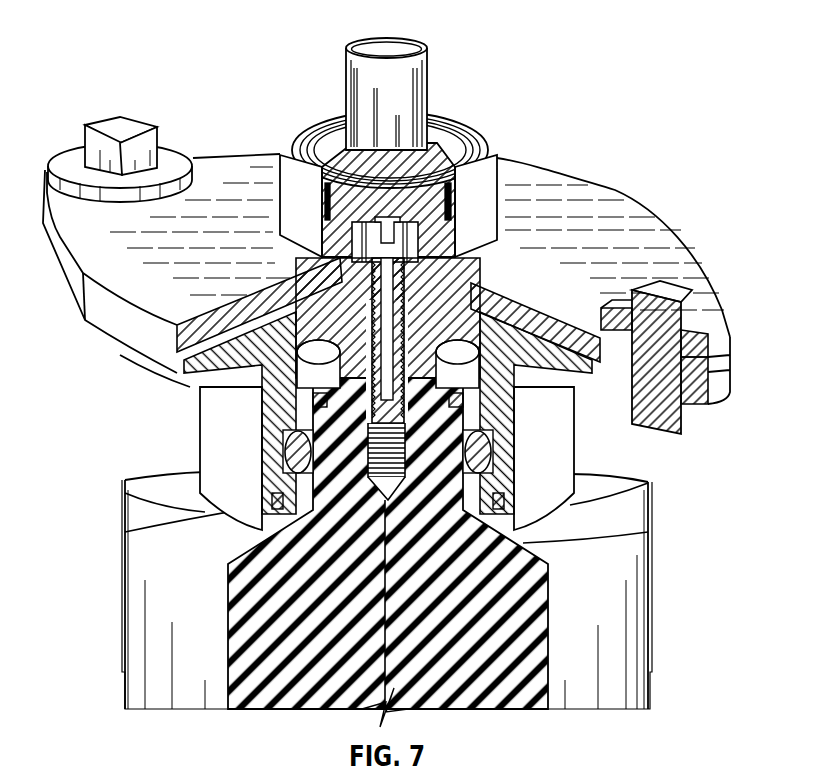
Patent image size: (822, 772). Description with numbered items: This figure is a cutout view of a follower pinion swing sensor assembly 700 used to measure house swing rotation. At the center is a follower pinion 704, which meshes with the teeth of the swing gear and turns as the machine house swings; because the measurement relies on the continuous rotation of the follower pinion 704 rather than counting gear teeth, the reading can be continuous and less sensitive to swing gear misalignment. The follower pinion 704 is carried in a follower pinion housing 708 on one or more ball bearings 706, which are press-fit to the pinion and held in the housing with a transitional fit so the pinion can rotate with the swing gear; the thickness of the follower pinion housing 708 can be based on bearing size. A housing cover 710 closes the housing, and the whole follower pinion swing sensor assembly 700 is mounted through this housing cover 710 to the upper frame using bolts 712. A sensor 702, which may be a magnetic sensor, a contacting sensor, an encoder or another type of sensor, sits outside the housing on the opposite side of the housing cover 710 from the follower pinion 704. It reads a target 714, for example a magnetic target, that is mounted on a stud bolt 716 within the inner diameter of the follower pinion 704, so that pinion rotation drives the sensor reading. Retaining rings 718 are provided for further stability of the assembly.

The follower pinion swing sensor assembly 700 is at (386, 368).
The sensor 702 is at (420, 45).
The follower pinion 704 is at (140, 629).
The ball bearing 706 is at (300, 468).
The follower pinion housing 708 is at (108, 424).
The housing cover 710 is at (210, 163).
The bolt 712 is at (120, 130).
The target 714 is at (382, 392).
The stud bolt 716 is at (384, 392).
The retaining ring 718 is at (441, 392).